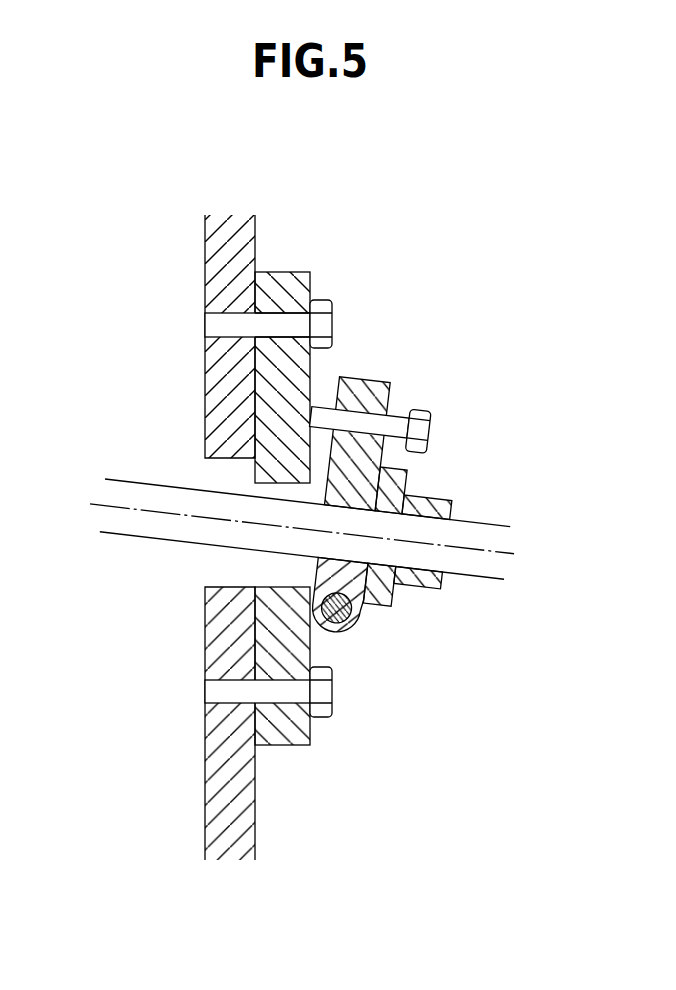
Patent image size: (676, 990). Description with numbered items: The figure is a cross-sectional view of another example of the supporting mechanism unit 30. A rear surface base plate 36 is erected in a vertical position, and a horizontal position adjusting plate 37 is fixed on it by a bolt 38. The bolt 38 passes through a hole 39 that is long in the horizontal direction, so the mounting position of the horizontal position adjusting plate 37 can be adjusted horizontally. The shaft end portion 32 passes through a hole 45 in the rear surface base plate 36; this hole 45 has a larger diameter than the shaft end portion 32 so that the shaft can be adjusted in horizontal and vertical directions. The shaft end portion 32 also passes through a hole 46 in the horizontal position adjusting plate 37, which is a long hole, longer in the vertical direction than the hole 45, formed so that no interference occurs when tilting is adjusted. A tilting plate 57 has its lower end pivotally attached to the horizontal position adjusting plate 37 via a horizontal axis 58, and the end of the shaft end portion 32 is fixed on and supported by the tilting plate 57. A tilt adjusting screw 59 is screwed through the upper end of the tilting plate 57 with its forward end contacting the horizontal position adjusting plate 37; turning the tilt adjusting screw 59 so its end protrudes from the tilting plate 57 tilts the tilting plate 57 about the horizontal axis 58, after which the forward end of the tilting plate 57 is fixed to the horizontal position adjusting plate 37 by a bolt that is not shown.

The supporting mechanism unit 30 is at (361, 214).
The shaft end portion 32 is at (133, 482).
The rear surface base plate 36 is at (205, 255).
The horizontal position adjusting plate 37 is at (287, 272).
The bolt 38 is at (332, 323).
The hole 39 is at (273, 343).
The hole 45 is at (218, 562).
The hole 46 is at (281, 566).
The tilting plate 57 is at (373, 380).
The horizontal axis 58 is at (343, 636).
The tilt adjusting screw 59 is at (432, 432).